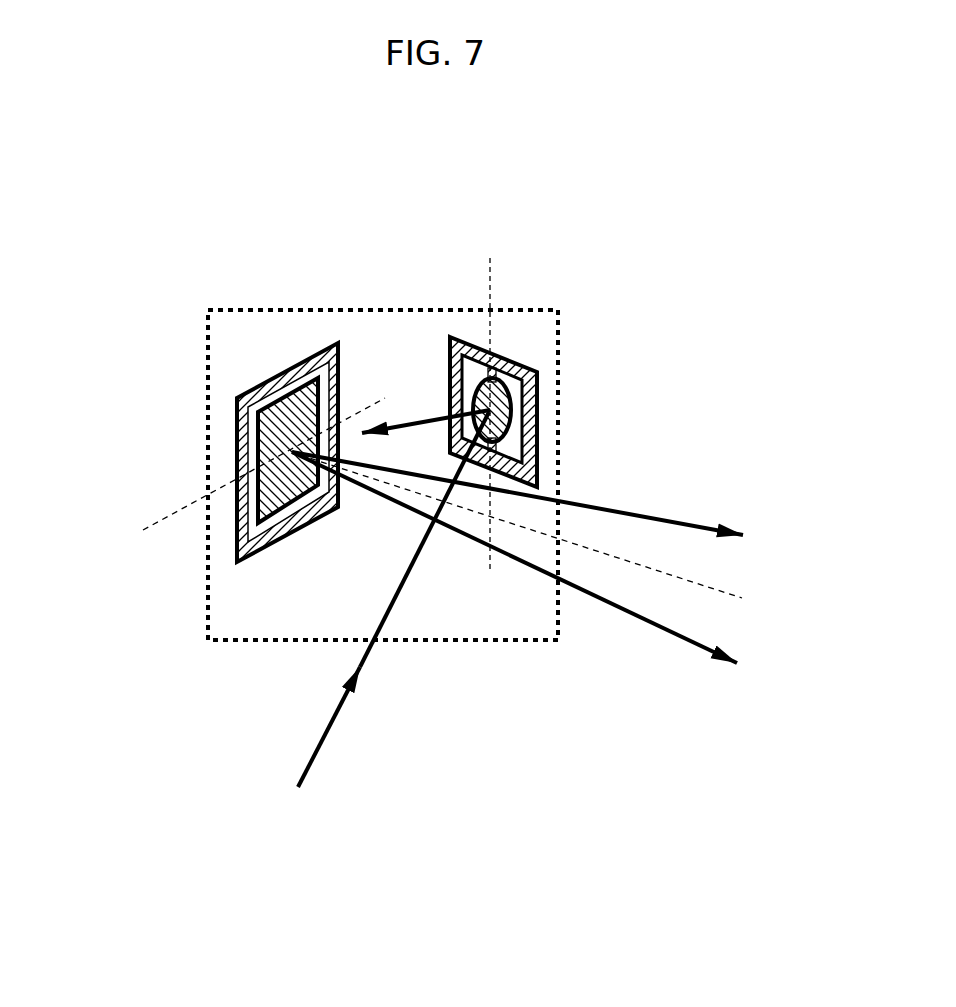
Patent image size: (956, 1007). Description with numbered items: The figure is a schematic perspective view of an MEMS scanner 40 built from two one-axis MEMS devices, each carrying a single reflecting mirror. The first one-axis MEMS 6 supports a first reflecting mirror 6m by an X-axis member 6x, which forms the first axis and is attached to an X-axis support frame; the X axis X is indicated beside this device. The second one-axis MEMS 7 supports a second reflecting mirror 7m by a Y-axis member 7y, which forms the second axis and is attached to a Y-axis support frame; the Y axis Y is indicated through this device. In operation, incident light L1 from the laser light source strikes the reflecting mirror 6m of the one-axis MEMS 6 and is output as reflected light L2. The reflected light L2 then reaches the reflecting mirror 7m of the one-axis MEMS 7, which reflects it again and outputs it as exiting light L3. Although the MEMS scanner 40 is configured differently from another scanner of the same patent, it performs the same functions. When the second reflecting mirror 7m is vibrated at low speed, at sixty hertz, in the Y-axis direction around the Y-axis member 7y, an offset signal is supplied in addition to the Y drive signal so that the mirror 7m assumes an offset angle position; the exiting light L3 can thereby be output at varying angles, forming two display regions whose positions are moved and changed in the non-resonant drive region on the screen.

The second one-axis MEMS 7 is at (202, 379).
The second reflecting mirror 7m is at (262, 407).
The Y-axis member 7y is at (258, 470).
The MEMS scanner 40 is at (332, 312).
The first one-axis MEMS 6 is at (597, 377).
The first reflecting mirror 6m is at (494, 398).
The X-axis member 6x is at (493, 447).
The incident light L1 is at (330, 727).
The reflected light L2 is at (430, 420).
The exiting light L3 is at (640, 515).
The X axis X is at (490, 392).
The Y axis Y is at (429, 498).